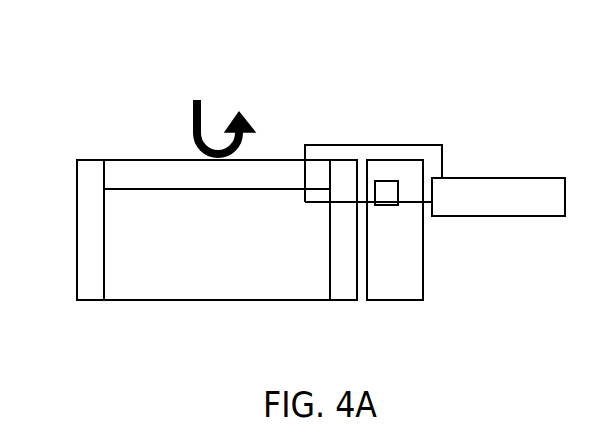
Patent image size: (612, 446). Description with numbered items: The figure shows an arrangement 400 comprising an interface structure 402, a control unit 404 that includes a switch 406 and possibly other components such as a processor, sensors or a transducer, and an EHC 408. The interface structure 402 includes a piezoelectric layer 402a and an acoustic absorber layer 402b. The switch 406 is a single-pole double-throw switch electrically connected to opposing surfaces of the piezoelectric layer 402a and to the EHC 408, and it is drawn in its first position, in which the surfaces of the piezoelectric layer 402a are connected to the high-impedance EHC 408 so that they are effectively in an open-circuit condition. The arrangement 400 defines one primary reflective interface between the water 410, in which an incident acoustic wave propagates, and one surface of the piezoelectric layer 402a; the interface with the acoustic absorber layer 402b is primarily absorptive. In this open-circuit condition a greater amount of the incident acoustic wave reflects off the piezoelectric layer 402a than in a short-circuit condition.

The arrangement 400 is at (318, 58).
The interface structure 402 is at (72, 161).
The piezoelectric layer 402a is at (152, 184).
The acoustic absorber layer 402b is at (152, 254).
The control unit 404 is at (425, 267).
The switch 406 is at (378, 185).
The EHC 408 is at (500, 175).
The water 410 is at (143, 139).